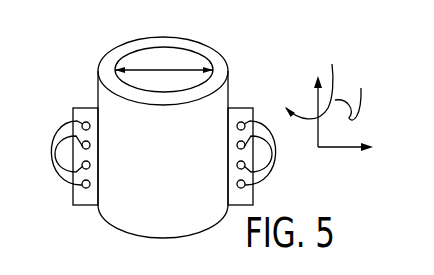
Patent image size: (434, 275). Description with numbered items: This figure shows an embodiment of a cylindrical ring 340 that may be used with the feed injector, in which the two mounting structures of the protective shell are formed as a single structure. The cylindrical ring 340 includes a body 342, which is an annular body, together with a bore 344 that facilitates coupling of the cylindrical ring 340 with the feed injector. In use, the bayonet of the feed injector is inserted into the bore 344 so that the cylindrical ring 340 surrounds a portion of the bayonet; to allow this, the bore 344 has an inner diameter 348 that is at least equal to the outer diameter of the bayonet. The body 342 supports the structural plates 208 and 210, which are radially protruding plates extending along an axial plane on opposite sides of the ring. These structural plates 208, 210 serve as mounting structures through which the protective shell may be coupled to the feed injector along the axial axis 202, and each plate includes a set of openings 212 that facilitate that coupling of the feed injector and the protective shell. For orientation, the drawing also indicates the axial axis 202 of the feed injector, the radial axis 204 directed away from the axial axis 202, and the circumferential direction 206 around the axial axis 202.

The axial axis 202 is at (317, 80).
The radial axis 204 is at (345, 150).
The circumferential direction 206 is at (355, 92).
The structural plate 208 is at (92, 108).
The structural plate 210 is at (238, 108).
The openings 212 is at (61, 154).
The cylindrical ring 340 is at (88, 58).
The body 342 is at (162, 238).
The bore 344 is at (152, 62).
The inner diameter 348 is at (183, 68).